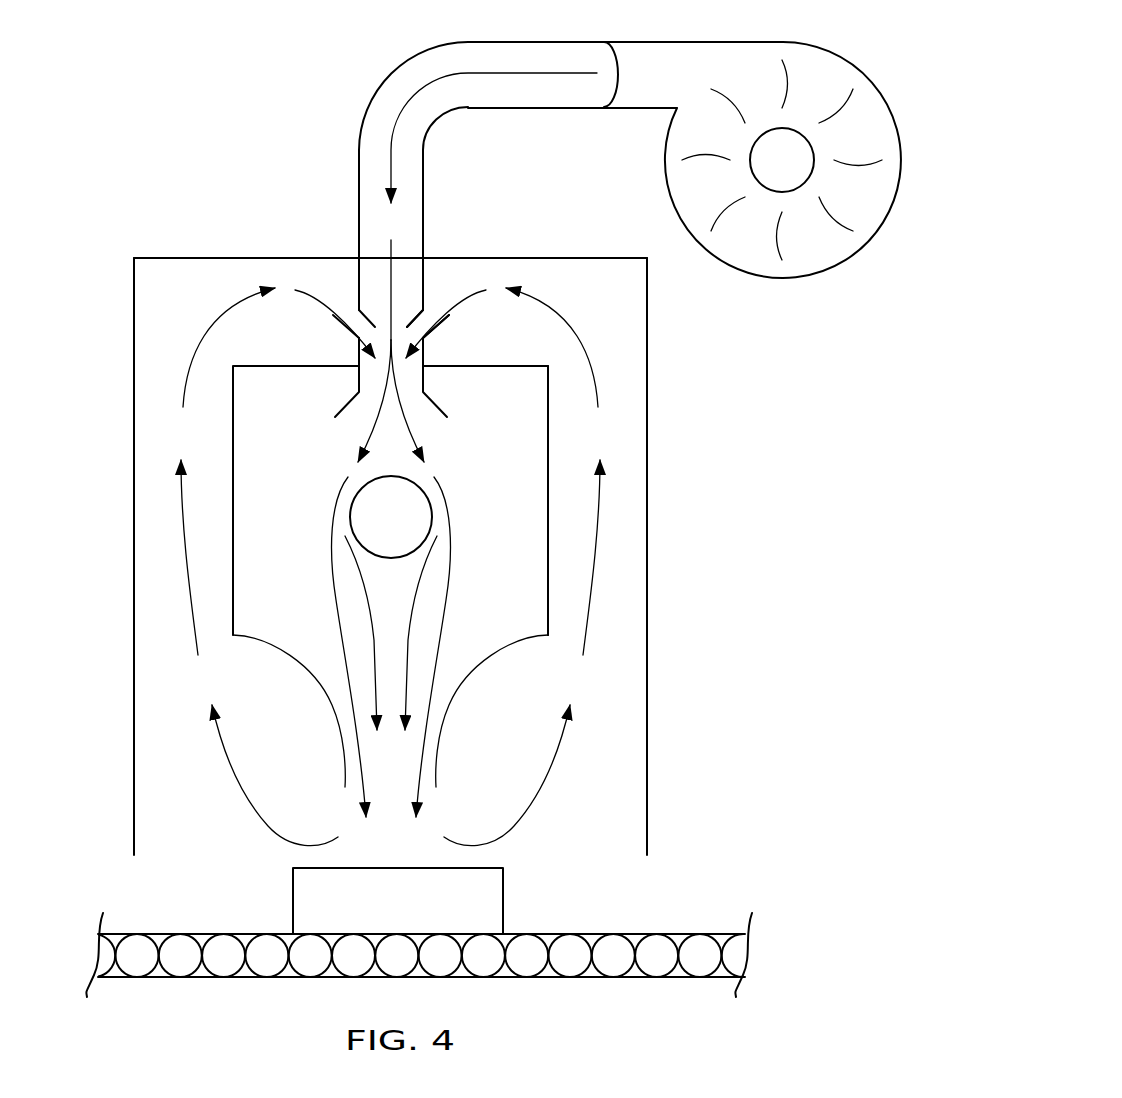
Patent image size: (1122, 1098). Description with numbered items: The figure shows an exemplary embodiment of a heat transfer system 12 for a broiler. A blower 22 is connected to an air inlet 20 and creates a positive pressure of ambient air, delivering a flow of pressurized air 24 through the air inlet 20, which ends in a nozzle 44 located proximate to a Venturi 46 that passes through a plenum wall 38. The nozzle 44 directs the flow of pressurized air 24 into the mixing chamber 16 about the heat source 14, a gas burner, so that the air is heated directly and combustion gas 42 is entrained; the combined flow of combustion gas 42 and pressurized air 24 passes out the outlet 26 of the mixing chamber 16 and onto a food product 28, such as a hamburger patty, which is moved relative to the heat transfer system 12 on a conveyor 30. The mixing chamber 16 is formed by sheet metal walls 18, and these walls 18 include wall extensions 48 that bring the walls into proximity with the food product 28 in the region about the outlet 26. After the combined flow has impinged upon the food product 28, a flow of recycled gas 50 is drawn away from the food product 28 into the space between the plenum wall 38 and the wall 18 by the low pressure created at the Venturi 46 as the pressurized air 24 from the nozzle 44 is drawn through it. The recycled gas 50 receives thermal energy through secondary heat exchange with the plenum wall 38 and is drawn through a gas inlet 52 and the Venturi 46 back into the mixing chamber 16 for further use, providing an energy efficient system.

The heat transfer system 12 is at (697, 335).
The heat source 14 is at (430, 500).
The mixing chamber 16 is at (266, 443).
The walls 18 is at (647, 540).
The air inlet 20 is at (370, 200).
The blower 22 is at (848, 62).
The flow of pressurized air 24 is at (413, 93).
The outlet 26 is at (443, 735).
The food product 28 is at (384, 918).
The conveyor 30 is at (253, 934).
The plenum wall 38 is at (548, 443).
The combustion gas 42 is at (367, 595).
The nozzle 44 is at (358, 290).
The Venturi 46 is at (425, 350).
The wall extensions 48 is at (112, 812).
The flow of recycled gas 50 is at (181, 555).
The gas inlet 52 is at (350, 305).